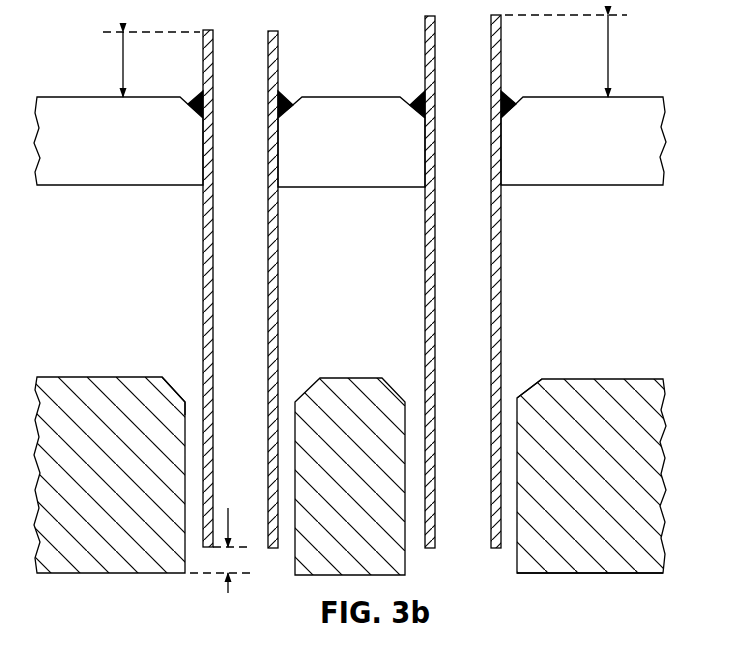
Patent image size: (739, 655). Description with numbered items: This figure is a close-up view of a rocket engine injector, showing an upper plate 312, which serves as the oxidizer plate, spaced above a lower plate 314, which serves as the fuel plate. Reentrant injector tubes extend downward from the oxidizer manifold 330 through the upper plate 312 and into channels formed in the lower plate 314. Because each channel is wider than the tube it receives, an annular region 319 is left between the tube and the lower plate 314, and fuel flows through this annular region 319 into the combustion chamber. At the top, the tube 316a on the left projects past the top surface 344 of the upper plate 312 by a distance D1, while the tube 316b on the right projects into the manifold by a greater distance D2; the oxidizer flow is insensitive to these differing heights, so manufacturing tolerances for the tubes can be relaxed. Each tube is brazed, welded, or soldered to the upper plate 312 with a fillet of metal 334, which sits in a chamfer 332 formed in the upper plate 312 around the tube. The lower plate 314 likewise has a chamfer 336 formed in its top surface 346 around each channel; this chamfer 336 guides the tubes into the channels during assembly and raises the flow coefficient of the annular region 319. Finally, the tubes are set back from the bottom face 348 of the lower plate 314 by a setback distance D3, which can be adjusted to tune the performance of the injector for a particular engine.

The upper plate 312 is at (109, 148).
The lower plate 314 is at (102, 425).
The tube 316a is at (203, 251).
The tube 316b is at (501, 250).
The annular region 319 is at (194, 413).
The oxidizer manifold 330 is at (385, 20).
The chamfer 332 is at (505, 117).
The fillet of metal 334 is at (503, 115).
The chamfer 336 is at (527, 395).
The top surface 344 is at (323, 97).
The top surface 346 is at (630, 379).
The bottom face 348 is at (553, 574).
The distance D1 is at (142, 64).
The distance D2 is at (576, 56).
The setback distance D3 is at (228, 593).